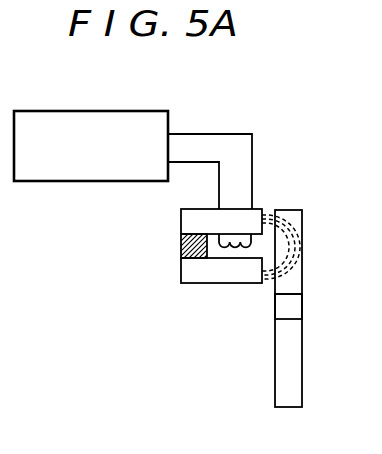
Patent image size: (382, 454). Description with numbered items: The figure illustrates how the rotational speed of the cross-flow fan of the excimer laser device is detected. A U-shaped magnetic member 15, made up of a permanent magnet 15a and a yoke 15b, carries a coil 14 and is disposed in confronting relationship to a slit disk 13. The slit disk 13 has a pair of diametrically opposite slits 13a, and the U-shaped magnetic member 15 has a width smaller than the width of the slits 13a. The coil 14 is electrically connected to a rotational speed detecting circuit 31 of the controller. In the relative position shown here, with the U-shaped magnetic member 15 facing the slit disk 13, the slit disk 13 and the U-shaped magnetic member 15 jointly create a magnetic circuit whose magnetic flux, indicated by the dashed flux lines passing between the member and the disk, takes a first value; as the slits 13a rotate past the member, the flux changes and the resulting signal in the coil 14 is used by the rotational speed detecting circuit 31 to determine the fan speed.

The rotational speed detecting circuit 31 is at (82, 110).
The coil 14 is at (253, 156).
The slit disk 13 is at (251, 304).
The slit 13a is at (285, 309).
The U-shaped magnetic member 15 is at (162, 246).
The permanent magnet 15a is at (182, 241).
The yoke 15b is at (184, 272).